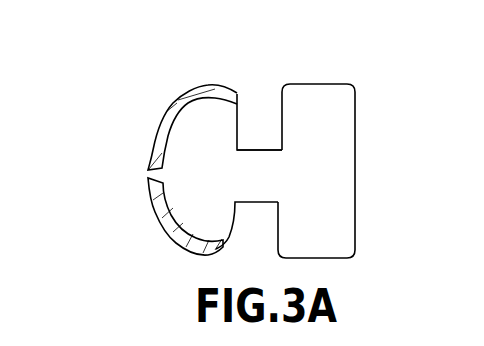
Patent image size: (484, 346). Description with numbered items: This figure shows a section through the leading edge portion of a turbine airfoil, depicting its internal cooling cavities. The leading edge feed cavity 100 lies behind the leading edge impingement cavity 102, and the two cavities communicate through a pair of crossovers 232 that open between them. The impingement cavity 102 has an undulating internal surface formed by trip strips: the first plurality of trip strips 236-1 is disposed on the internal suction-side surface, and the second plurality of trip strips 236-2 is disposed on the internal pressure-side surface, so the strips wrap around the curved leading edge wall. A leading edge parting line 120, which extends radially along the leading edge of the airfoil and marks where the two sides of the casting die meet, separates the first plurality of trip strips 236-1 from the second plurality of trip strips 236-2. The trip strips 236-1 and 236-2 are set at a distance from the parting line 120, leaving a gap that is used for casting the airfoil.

The leading edge feed cavity 100 is at (332, 182).
The leading edge impingement cavity 102 is at (215, 184).
The leading edge parting line 120 is at (79, 0).
The crossover 232 is at (260, 175).
The first plurality of trip strips 236-1 is at (190, 88).
The second plurality of trip strips 236-2 is at (157, 218).